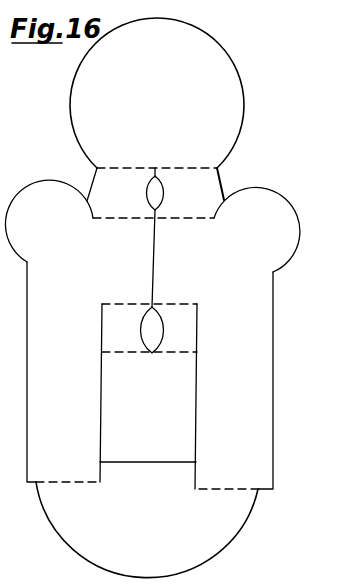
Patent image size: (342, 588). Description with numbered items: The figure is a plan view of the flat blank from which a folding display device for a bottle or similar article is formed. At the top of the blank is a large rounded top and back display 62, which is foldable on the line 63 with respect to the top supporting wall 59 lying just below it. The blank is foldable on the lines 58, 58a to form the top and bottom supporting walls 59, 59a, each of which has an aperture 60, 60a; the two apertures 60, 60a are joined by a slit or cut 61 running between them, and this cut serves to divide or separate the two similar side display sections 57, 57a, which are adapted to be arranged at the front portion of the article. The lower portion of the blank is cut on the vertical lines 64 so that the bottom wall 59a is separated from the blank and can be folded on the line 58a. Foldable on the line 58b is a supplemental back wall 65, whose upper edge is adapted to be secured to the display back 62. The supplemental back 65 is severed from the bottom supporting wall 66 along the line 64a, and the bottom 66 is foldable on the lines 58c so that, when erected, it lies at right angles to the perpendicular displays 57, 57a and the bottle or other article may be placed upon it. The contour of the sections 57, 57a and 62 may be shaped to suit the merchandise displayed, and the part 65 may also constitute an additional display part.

The side display section 57 is at (245, 228).
The side display section 57a is at (40, 190).
The fold line 58 is at (106, 220).
The fold line 58a is at (112, 303).
The fold line 58b is at (183, 353).
The fold line 58c is at (222, 483).
The top supporting wall 59 is at (210, 185).
The bottom supporting wall 59a is at (190, 333).
The aperture 60 is at (162, 190).
The aperture 60a is at (141, 330).
The slit or cut 61 is at (154, 270).
The top and back display 62 is at (225, 73).
The fold line 63 is at (108, 167).
The vertical cut line 64 is at (198, 403).
The cut line 64a is at (175, 462).
The supplemental back wall 65 is at (186, 383).
The bottom supporting wall 66 is at (218, 520).